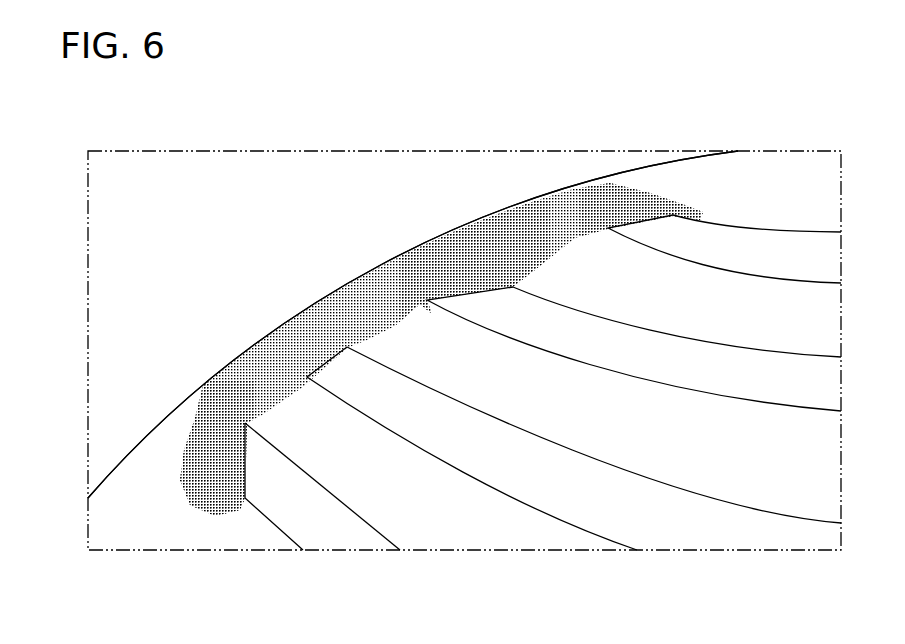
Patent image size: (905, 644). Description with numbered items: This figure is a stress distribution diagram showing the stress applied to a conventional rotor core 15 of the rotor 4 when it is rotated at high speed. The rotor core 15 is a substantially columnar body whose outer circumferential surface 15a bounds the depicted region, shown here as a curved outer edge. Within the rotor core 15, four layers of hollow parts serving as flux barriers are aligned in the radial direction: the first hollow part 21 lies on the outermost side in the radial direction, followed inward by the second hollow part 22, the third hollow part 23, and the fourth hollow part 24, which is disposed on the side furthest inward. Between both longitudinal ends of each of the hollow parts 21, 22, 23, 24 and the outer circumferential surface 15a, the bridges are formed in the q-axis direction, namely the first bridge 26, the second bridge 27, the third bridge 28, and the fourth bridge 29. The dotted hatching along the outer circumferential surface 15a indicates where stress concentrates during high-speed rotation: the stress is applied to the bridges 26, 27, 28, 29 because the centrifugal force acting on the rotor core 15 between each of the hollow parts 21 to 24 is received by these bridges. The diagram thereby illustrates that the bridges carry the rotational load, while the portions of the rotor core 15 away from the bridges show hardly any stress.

The rotor 4 is at (133, 447).
The rotor core 15 is at (153, 520).
The outer circumferential surface 15a is at (163, 424).
The first hollow part 21 is at (759, 232).
The second hollow part 22 is at (665, 330).
The third hollow part 23 is at (552, 455).
The fourth hollow part 24 is at (347, 508).
The first bridge 26 is at (630, 202).
The second bridge 27 is at (472, 262).
The third bridge 28 is at (318, 333).
The fourth bridge 29 is at (213, 423).